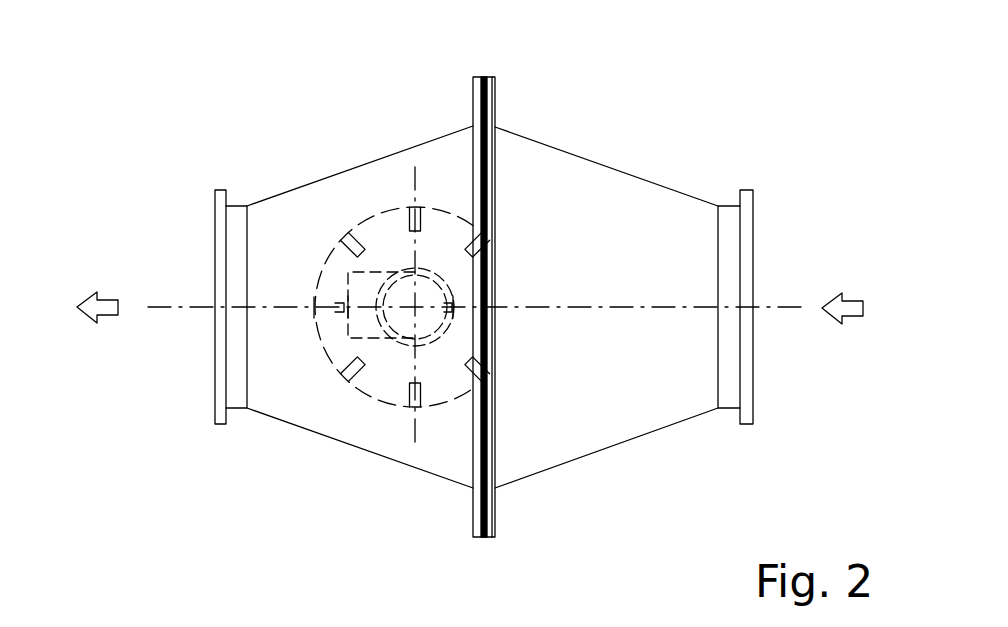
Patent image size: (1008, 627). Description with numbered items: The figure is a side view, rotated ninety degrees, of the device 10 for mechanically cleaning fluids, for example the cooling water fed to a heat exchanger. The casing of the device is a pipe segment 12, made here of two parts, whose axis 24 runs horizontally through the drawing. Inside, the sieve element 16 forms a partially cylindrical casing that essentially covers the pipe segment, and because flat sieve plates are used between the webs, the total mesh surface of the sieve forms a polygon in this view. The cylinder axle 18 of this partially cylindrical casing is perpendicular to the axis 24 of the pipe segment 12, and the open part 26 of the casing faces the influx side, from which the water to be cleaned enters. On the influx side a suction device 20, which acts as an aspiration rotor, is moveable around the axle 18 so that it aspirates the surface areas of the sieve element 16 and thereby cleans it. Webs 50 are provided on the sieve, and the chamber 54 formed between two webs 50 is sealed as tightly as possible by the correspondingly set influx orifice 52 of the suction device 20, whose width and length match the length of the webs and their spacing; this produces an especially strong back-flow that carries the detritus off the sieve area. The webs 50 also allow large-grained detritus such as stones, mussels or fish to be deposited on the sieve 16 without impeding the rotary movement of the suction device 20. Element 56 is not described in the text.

The device 10 is at (819, 45).
The pipe segment 12 is at (659, 181).
The sieve element 16 is at (362, 388).
The cylinder axle 18 is at (413, 312).
The suction device 20 is at (363, 323).
The axis 24 is at (603, 308).
The open part 26 is at (493, 243).
The webs 50 is at (408, 233).
The influx orifice 52 is at (348, 325).
The chamber 54 is at (362, 218).
The hub ring 56 is at (415, 307).